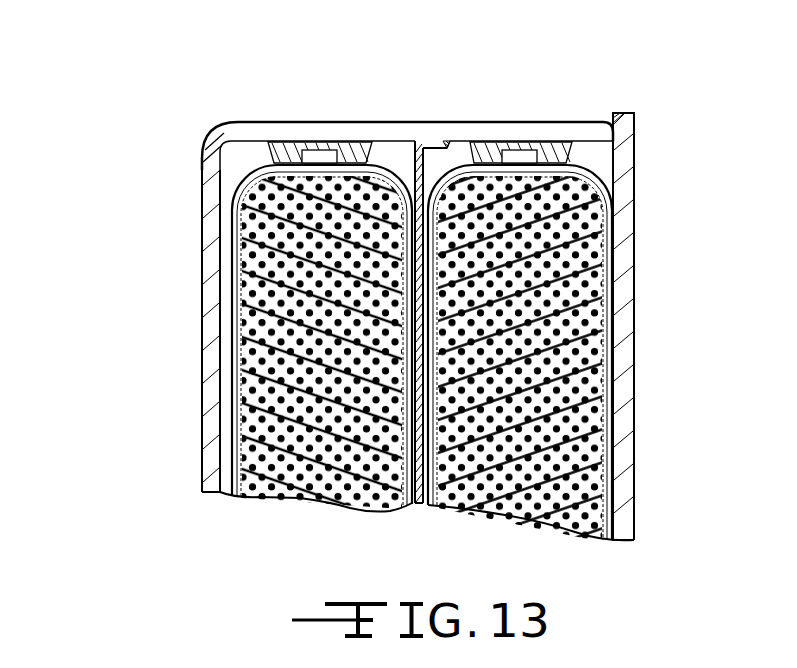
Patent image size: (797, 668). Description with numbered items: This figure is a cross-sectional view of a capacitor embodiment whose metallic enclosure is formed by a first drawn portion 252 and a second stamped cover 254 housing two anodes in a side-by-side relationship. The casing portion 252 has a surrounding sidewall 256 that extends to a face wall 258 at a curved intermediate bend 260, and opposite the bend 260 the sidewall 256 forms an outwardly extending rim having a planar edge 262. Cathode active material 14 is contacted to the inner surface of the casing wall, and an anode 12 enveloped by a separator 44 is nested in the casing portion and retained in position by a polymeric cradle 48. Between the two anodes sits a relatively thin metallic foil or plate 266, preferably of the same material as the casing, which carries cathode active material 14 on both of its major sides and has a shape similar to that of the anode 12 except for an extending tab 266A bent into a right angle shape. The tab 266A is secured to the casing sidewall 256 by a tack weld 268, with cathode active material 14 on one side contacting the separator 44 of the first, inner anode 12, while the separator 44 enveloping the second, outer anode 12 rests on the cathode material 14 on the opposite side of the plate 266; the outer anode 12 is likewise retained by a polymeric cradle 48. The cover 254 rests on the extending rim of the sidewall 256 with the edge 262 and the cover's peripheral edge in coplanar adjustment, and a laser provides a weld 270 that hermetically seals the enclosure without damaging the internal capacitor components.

The anode 12 is at (296, 490).
The cathode active material 14 is at (230, 278).
The separator 44 is at (247, 165).
The polymeric cradle 48 is at (292, 152).
The first drawn portion 252 is at (178, 440).
The second stamped cover 254 is at (633, 113).
The surrounding sidewall 256 is at (358, 139).
The face wall 258 is at (203, 363).
The curved intermediate bend 260 is at (158, 127).
The planar edge 262 is at (606, 112).
The metallic foil or plate 266 is at (417, 158).
The extending tab 266A is at (437, 140).
The tack weld 268 is at (449, 142).
The weld 270 is at (619, 112).